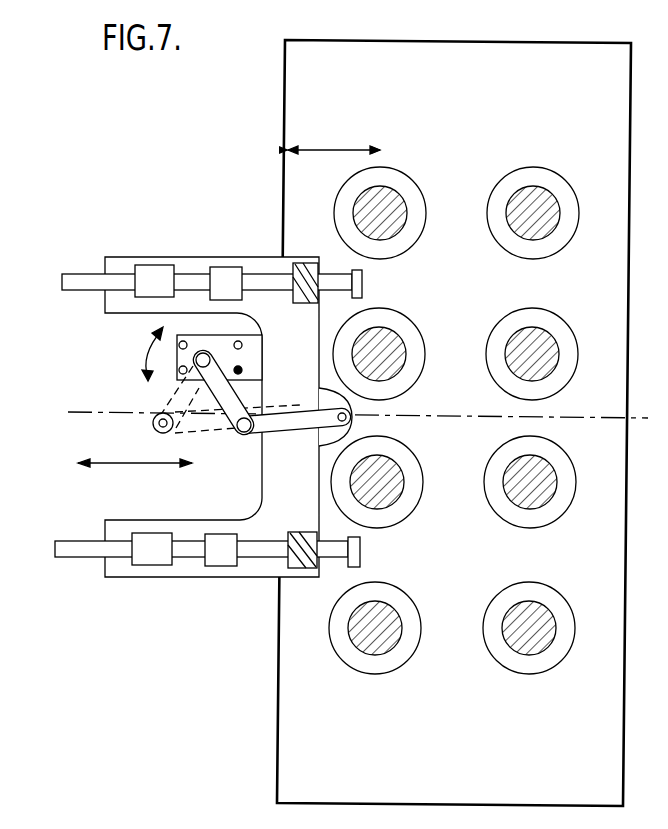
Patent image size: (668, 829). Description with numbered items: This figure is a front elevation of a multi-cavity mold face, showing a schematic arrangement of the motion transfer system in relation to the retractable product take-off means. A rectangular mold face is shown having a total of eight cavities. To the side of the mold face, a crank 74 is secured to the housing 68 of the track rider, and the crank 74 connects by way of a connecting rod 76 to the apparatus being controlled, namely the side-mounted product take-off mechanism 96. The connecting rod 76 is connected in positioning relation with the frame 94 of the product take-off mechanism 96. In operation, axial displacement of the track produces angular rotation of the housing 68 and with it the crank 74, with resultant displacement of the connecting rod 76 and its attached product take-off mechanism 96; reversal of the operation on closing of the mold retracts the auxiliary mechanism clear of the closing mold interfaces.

The housing 68 is at (202, 352).
The crank 74 is at (173, 408).
The connecting rod 76 is at (270, 440).
The frame 94 is at (255, 262).
The product take-off mechanism 96 is at (258, 592).